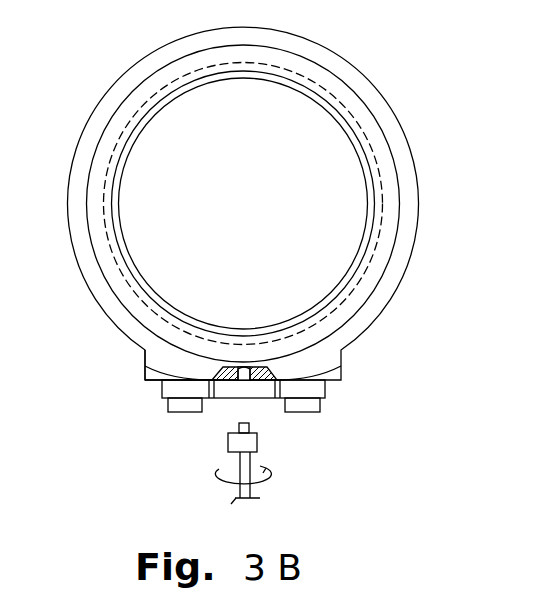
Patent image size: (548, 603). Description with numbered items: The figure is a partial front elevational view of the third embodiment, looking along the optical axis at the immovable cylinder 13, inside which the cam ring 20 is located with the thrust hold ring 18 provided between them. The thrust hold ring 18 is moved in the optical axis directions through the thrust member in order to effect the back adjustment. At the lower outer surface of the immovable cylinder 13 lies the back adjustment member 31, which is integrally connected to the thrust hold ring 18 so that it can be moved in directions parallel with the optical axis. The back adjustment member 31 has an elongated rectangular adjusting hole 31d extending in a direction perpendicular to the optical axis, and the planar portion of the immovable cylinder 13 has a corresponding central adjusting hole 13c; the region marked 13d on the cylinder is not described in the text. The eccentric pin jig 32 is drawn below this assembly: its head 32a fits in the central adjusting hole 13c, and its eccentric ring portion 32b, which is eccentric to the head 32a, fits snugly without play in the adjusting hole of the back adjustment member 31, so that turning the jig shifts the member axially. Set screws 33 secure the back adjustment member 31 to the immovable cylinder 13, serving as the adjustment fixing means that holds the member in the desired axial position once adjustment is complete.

The immovable cylinder 13 is at (269, 36).
The central adjusting hole 13c is at (146, 367).
The base of holder 13d is at (177, 383).
The thrust hold ring 18 is at (308, 70).
The cam ring 20 is at (282, 80).
The back adjustment member 31 is at (322, 390).
The elongated rectangular adjusting hole 31d is at (231, 399).
The eccentric pin jig 32 is at (216, 468).
The head 32a is at (249, 428).
The eccentric ring portion 32b is at (258, 445).
The set screws 33 is at (180, 409).